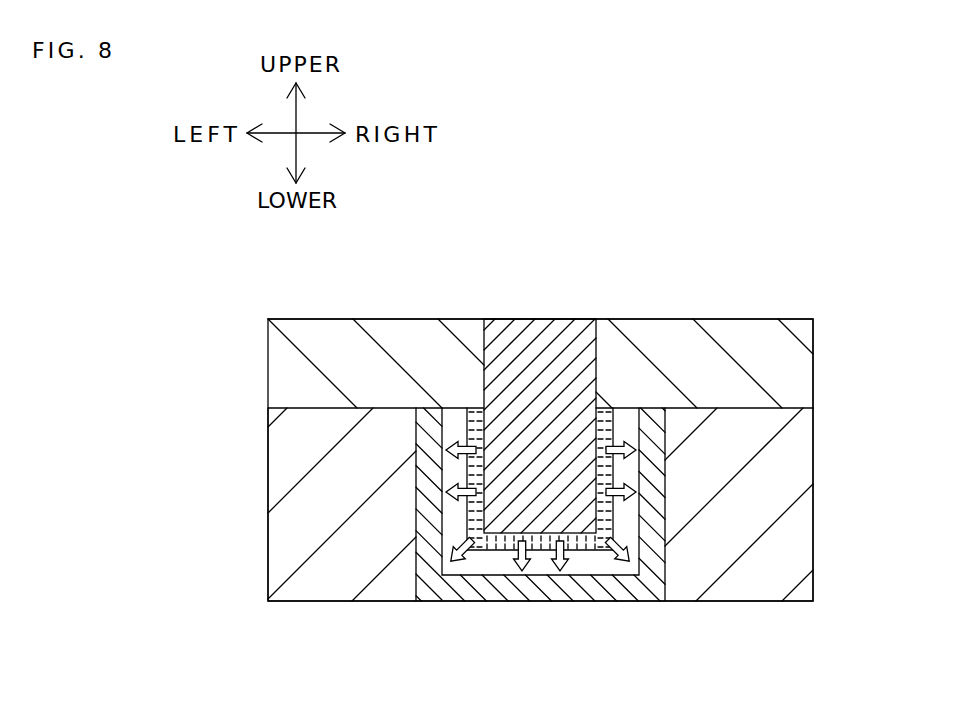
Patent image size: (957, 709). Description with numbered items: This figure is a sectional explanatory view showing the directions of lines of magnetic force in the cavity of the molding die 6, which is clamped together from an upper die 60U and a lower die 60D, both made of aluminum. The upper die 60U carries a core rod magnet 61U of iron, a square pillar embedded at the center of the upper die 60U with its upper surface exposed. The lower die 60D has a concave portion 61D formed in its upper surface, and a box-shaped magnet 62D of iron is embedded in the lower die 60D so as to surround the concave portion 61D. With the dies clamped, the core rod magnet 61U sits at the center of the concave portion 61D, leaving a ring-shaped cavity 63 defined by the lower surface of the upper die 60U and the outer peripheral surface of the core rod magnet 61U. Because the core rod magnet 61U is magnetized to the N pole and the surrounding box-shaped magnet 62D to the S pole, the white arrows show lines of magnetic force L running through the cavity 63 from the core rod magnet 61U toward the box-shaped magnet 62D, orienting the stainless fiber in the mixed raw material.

The molding die 6 is at (752, 215).
The upper die 60U is at (760, 340).
The lower die 60D is at (760, 573).
The core rod magnet 61U is at (539, 340).
The concave portion 61D is at (474, 410).
The box-shaped magnet 62D is at (565, 590).
The cavity 63 is at (544, 540).
The lines of magnetic force L is at (477, 555).